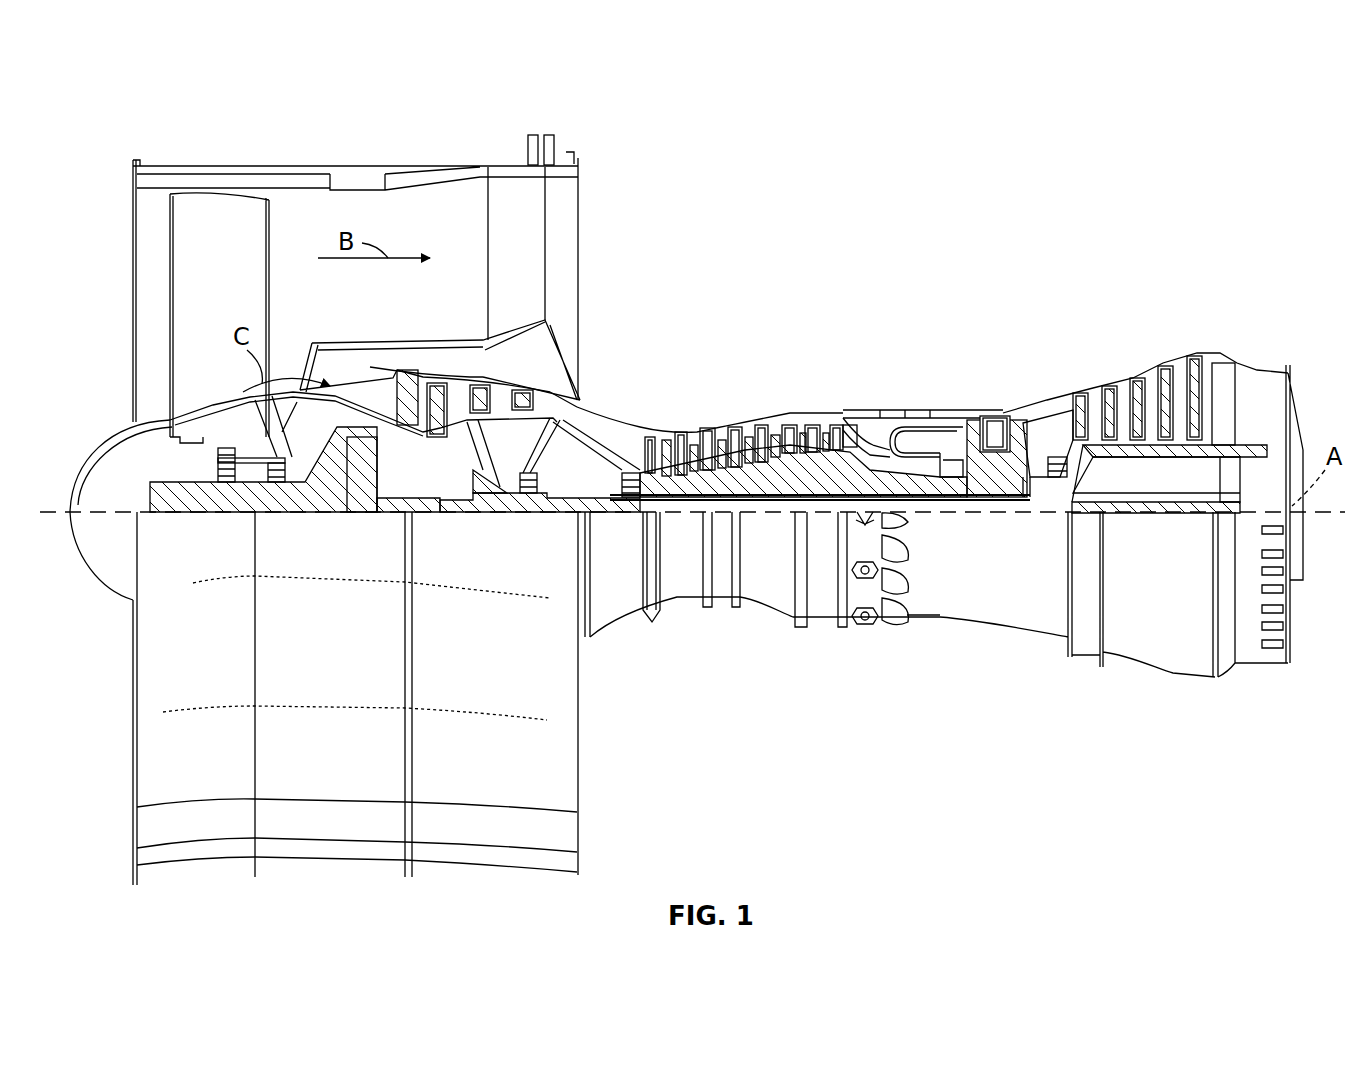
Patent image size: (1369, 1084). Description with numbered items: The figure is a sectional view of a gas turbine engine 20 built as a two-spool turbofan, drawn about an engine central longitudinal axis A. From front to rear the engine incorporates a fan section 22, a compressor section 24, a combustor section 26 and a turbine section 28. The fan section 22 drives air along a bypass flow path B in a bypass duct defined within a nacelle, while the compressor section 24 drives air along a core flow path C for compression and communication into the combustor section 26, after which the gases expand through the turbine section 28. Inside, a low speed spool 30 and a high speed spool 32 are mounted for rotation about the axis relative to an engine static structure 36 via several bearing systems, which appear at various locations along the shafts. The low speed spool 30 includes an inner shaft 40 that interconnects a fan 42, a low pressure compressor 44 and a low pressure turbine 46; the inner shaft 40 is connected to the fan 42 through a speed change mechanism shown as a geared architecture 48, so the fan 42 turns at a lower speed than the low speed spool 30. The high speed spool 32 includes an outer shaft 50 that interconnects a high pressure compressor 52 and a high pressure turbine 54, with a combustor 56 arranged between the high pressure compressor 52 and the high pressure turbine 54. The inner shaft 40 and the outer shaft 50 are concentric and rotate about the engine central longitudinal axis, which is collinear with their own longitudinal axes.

The gas turbine engine 20 is at (1172, 172).
The fan section 22 is at (240, 162).
The compressor section 24 is at (743, 326).
The combustor section 26 is at (932, 312).
The turbine section 28 is at (1078, 303).
The low speed spool 30 is at (787, 519).
The high speed spool 32 is at (830, 460).
The engine static structure 36 is at (825, 627).
The inner shaft 40 is at (597, 514).
The fan 42 is at (231, 304).
The low pressure compressor 44 is at (500, 393).
The low pressure turbine 46 is at (1152, 372).
The geared architecture 48 is at (363, 492).
The outer shaft 50 is at (945, 503).
The high pressure compressor 52 is at (737, 482).
The high pressure turbine 54 is at (997, 412).
The combustor 56 is at (917, 436).